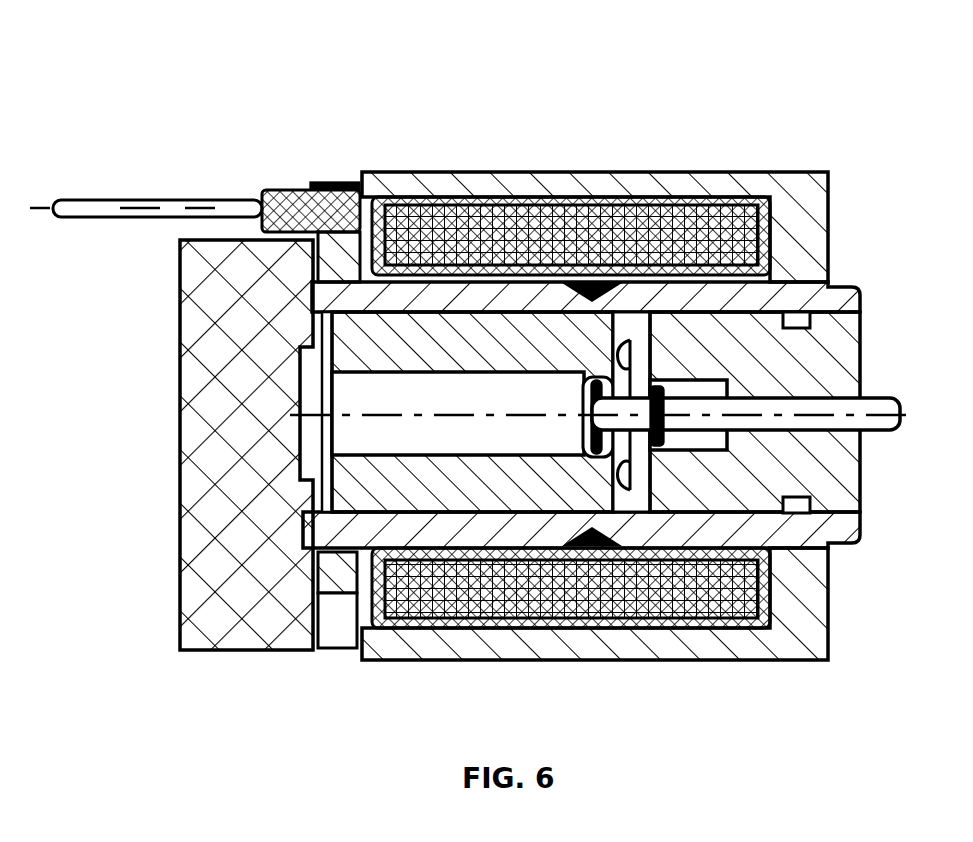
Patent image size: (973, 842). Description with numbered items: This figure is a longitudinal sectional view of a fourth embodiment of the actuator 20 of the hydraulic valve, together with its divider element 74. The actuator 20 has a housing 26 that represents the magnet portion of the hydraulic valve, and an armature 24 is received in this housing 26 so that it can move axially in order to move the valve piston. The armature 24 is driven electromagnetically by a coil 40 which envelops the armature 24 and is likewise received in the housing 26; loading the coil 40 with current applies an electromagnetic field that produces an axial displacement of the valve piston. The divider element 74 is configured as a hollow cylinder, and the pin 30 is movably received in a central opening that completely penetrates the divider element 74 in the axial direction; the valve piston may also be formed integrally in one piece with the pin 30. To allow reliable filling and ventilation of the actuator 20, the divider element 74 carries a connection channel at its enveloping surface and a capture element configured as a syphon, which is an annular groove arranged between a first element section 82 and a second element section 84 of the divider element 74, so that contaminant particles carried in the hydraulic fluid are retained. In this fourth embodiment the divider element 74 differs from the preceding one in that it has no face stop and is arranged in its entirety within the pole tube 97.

The actuator 20 is at (862, 103).
The armature 24 is at (482, 325).
The housing 26 is at (570, 172).
The pin 30 is at (877, 397).
The coil 40 is at (645, 230).
The divider element 74 is at (863, 343).
The first element section 82 is at (840, 348).
The second element section 84 is at (706, 340).
The pole tube 97 is at (830, 575).